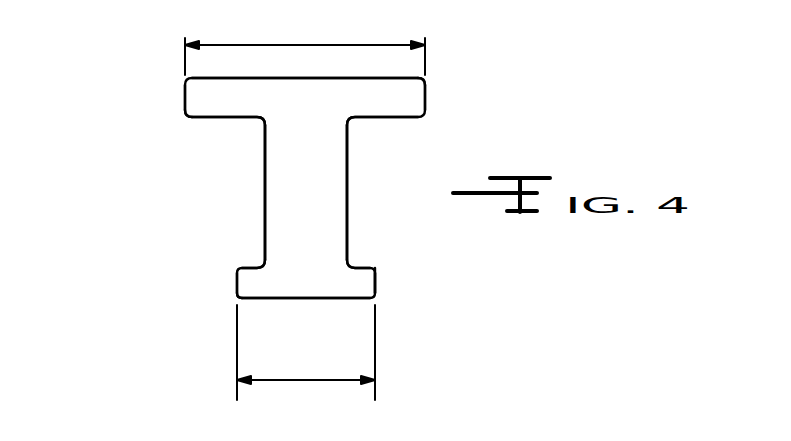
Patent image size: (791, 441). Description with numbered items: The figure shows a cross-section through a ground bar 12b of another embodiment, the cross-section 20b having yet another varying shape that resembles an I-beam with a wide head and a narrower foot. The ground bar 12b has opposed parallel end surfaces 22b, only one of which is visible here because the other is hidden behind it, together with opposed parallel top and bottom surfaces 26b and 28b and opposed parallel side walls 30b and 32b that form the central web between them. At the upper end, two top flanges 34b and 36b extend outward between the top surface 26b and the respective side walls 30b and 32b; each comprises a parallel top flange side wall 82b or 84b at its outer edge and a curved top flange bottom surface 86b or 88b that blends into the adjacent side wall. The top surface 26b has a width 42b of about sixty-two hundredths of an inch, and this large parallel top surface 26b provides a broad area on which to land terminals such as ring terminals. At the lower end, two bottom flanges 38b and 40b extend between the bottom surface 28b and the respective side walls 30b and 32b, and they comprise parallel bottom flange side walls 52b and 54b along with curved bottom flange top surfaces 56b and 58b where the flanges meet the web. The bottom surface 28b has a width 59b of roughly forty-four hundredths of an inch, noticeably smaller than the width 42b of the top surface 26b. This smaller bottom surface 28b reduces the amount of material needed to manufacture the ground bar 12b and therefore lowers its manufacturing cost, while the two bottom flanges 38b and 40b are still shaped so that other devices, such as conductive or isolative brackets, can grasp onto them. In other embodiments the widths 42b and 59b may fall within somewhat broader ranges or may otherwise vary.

The ground bar 12b is at (478, 82).
The cross-section 20b is at (282, 180).
The end surface 22b is at (328, 203).
The top surface 26b is at (262, 78).
The bottom surface 28b is at (287, 299).
The side wall 30b is at (263, 149).
The side wall 32b is at (347, 163).
The top flange 34b is at (212, 100).
The top flange 36b is at (410, 100).
The bottom flange 38b is at (255, 282).
The bottom flange 40b is at (357, 287).
The width of top surface 42b is at (238, 44).
The bottom flange side wall 52b is at (235, 293).
The bottom flange side wall 54b is at (376, 278).
The bottom flange top surface 56b is at (257, 268).
The bottom flange top surface 58b is at (359, 268).
The width of bottom surface 59b is at (288, 381).
The top flange side wall 82b is at (183, 109).
The top flange side wall 84b is at (426, 89).
The top flange bottom surface 86b is at (210, 118).
The top flange bottom surface 88b is at (385, 118).